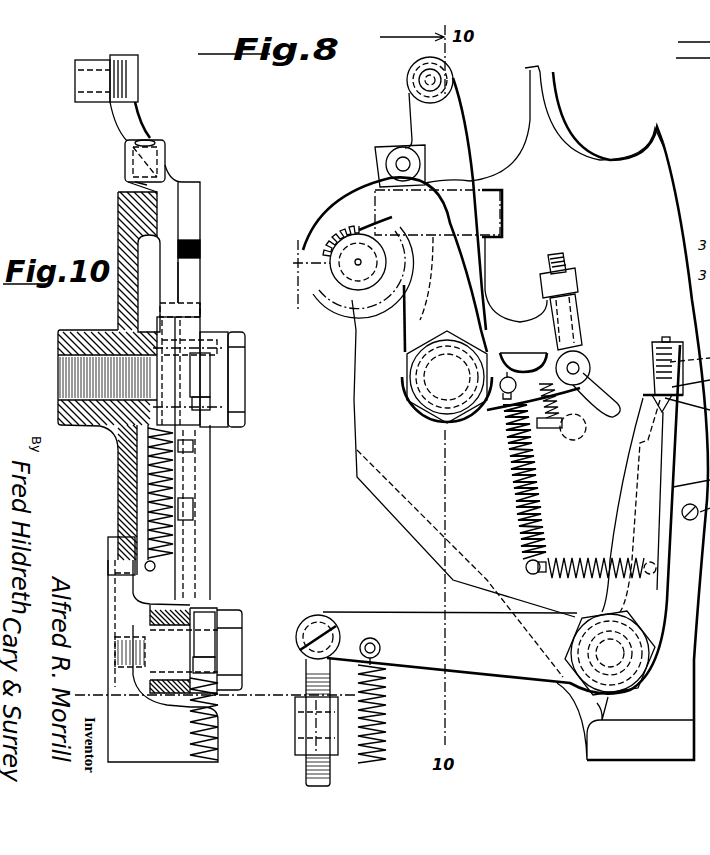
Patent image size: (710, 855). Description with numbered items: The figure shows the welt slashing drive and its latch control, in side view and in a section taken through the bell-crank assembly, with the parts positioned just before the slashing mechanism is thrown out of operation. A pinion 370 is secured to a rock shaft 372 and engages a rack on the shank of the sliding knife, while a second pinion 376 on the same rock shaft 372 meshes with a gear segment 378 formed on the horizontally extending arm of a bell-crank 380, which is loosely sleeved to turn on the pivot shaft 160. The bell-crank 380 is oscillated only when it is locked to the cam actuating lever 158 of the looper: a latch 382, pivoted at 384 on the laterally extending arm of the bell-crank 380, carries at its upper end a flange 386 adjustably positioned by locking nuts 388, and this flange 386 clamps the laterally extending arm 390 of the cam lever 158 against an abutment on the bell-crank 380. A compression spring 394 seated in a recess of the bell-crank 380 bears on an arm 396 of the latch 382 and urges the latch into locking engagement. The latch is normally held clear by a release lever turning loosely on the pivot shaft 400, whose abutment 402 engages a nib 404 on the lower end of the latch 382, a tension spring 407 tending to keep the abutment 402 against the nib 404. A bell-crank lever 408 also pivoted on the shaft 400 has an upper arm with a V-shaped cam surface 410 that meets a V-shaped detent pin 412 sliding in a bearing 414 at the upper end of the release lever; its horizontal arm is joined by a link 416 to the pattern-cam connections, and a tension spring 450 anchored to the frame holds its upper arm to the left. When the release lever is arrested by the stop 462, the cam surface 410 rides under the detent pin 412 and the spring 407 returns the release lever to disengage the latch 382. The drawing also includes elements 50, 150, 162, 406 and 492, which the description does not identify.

In FIG. 10, the frame body 50 is at (128, 220).
In FIG. 8, the frame body 50 is at (418, 533).
In FIG. 10, the spring 150 is at (210, 714).
In FIG. 10, the cam actuating lever 158 is at (134, 130).
In FIG. 8, the cam actuating lever 158 is at (463, 150).
In FIG. 10, the pivot shaft 160 is at (240, 392).
In FIG. 8, the pivot shaft 160 is at (433, 378).
In FIG. 10, the fitting 162 is at (90, 64).
In FIG. 8, the pinion 370 is at (298, 268).
In FIG. 8, the rock shaft 372 is at (358, 264).
In FIG. 8, the second pinion 376 is at (302, 277).
In FIG. 8, the gear segment 378 is at (338, 243).
In FIG. 10, the bell-crank 380 is at (192, 282).
In FIG. 8, the bell-crank 380 is at (442, 278).
In FIG. 8, the latch 382 is at (577, 330).
In FIG. 8, the pivot 384 is at (575, 364).
In FIG. 8, the flange 386 is at (583, 295).
In FIG. 8, the locking nuts 388 is at (577, 277).
In FIG. 10, the laterally extending arm 390 is at (203, 318).
In FIG. 8, the laterally extending arm 390 is at (547, 315).
In FIG. 8, the compression spring 394 is at (520, 417).
In FIG. 8, the arm 396 is at (552, 428).
In FIG. 10, the pivot shaft 400 is at (230, 666).
In FIG. 8, the pivot shaft 400 is at (613, 657).
In FIG. 8, the abutment 402 is at (638, 462).
In FIG. 8, the nib 404 is at (610, 412).
In FIG. 10, the bracket 406 is at (146, 562).
In FIG. 8, the tension spring 407 is at (587, 553).
In FIG. 10, the bell-crank lever 408 is at (200, 606).
In FIG. 8, the bell-crank lever 408 is at (518, 673).
In FIG. 10, the V-shaped cam surface 410 is at (202, 410).
In FIG. 10, the V-shaped detent pin 412 is at (210, 400).
In FIG. 10, the bearing 414 is at (215, 372).
In FIG. 8, the link 416 is at (300, 676).
In FIG. 8, the tension spring 450 is at (383, 728).
In FIG. 10, the stop 462 is at (143, 512).
In FIG. 8, the pin 492 is at (550, 345).